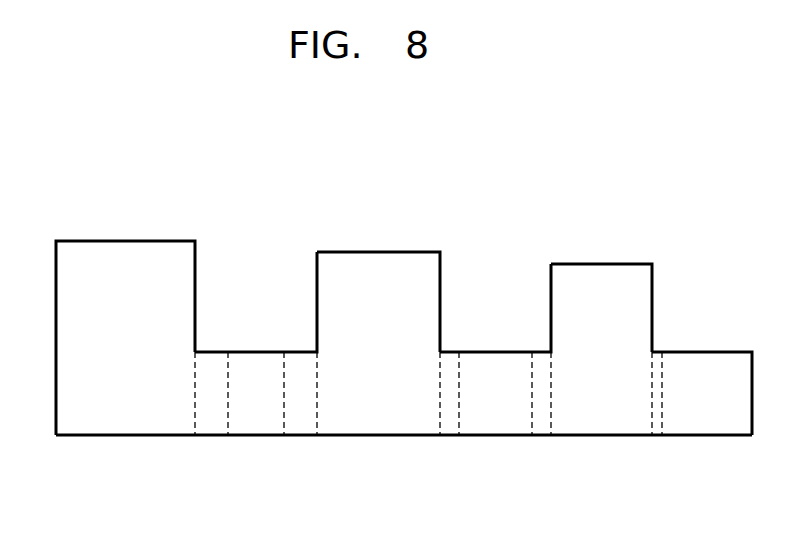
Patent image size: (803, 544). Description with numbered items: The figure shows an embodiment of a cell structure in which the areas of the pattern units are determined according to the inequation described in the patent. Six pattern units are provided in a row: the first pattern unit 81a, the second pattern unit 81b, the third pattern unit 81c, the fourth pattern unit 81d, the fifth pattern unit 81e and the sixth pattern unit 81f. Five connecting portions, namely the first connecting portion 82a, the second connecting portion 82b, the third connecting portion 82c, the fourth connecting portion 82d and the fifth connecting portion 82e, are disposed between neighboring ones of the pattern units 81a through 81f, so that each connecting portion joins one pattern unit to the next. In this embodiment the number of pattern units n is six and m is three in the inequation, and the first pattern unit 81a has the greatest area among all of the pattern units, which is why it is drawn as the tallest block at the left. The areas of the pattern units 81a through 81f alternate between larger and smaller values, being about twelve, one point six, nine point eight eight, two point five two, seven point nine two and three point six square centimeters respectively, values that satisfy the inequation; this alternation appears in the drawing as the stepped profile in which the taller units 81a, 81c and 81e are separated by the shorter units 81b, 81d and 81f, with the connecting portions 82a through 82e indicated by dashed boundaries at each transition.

The first pattern unit 81a is at (126, 246).
The second pattern unit 81b is at (255, 358).
The third pattern unit 81c is at (376, 257).
The fourth pattern unit 81d is at (492, 357).
The fifth pattern unit 81e is at (597, 269).
The sixth pattern unit 81f is at (710, 358).
The first connecting portion 82a is at (212, 436).
The second connecting portion 82b is at (301, 436).
The third connecting portion 82c is at (451, 436).
The fourth connecting portion 82d is at (542, 436).
The fifth connecting portion 82e is at (656, 436).